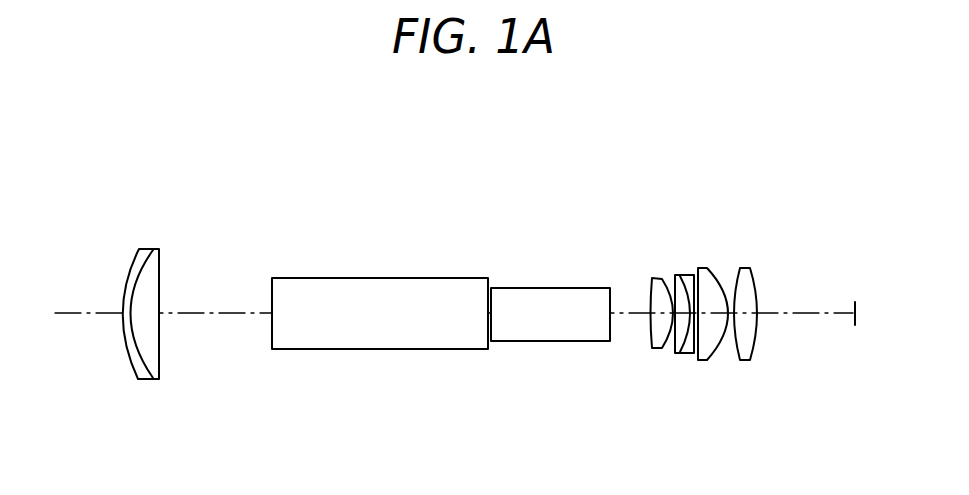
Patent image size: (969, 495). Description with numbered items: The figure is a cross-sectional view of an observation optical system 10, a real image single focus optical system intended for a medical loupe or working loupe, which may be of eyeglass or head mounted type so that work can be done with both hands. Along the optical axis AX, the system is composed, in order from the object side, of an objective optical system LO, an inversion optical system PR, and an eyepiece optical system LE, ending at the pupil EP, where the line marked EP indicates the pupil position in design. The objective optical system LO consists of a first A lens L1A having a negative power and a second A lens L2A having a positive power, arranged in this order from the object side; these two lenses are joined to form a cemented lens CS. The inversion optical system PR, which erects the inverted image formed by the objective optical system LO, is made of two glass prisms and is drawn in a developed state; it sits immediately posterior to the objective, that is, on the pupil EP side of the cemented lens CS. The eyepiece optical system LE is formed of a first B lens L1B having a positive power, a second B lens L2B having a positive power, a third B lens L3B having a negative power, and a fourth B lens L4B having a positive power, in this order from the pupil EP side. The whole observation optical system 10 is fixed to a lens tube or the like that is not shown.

The observation optical system 10 is at (691, 105).
The optical axis AX is at (630, 311).
The objective optical system LO is at (175, 382).
The cemented lens CS is at (205, 186).
The first A lens L1A is at (140, 247).
The second A lens L2A is at (158, 256).
The inversion optical system PR is at (617, 382).
The eyepiece optical system LE is at (752, 380).
The first B lens L1B is at (745, 270).
The second B lens L2B is at (705, 268).
The third B lens L3B is at (685, 275).
The fourth B lens L4B is at (659, 278).
The pupil EP is at (852, 327).